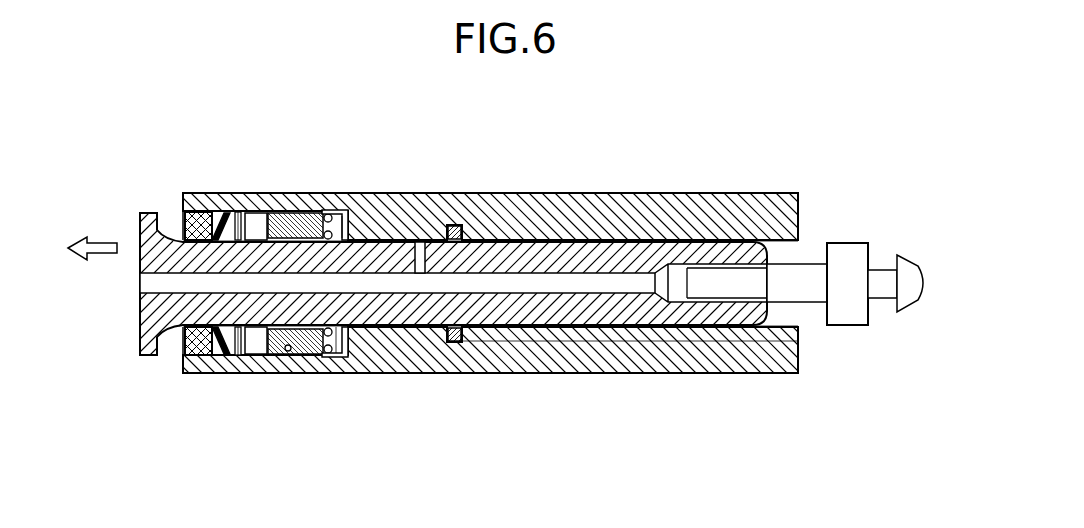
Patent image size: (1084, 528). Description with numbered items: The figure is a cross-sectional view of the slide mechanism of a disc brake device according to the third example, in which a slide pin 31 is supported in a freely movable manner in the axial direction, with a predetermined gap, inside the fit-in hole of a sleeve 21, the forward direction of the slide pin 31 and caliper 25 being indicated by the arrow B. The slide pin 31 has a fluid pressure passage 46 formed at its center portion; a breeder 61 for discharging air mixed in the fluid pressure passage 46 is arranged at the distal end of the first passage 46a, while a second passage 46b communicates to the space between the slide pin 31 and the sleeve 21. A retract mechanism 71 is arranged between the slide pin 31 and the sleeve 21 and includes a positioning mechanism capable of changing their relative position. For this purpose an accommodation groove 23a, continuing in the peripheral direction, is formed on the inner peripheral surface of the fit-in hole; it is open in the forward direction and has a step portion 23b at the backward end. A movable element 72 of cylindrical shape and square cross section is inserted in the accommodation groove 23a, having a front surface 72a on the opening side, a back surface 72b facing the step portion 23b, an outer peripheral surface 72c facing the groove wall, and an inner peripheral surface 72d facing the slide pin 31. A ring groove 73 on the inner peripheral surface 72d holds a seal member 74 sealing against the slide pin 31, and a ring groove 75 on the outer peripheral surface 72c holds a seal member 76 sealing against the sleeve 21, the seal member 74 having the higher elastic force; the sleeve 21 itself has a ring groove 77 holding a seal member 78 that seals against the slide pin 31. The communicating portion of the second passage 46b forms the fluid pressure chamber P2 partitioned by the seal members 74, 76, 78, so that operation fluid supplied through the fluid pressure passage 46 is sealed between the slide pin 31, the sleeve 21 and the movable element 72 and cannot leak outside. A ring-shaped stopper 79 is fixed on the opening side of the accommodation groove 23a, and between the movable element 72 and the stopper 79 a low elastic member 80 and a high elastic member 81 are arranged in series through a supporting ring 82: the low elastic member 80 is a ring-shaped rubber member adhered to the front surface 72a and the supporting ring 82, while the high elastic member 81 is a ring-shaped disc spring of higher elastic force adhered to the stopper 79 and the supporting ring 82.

The sleeve 21 is at (778, 210).
The caliper 25 is at (453, 285).
The slide pin 31 is at (453, 285).
The fluid pressure passage 46 is at (417, 290).
The first passage 46a is at (625, 288).
The second passage 46b is at (400, 240).
The breeder 61 is at (848, 257).
The retract mechanism 71 is at (295, 200).
The movable element 72 is at (274, 272).
The front surface 72a is at (250, 215).
The back surface 72b is at (358, 230).
The outer peripheral surface 72c is at (274, 213).
The inner peripheral surface 72d is at (182, 238).
The ring groove 73 is at (358, 345).
The seal member 74 is at (420, 241).
The ring groove 75 is at (325, 352).
The seal member 76 is at (330, 217).
The ring groove 77 is at (482, 342).
The seal member 78 is at (455, 228).
The stopper 79 is at (187, 343).
The low elastic member 80 is at (255, 355).
The high elastic member 81 is at (205, 214).
The supporting ring 82 is at (237, 358).
The accommodation groove 23a is at (290, 352).
The step portion 23b is at (340, 357).
The fluid pressure chamber P2 is at (353, 226).
The direction of movement B is at (100, 256).